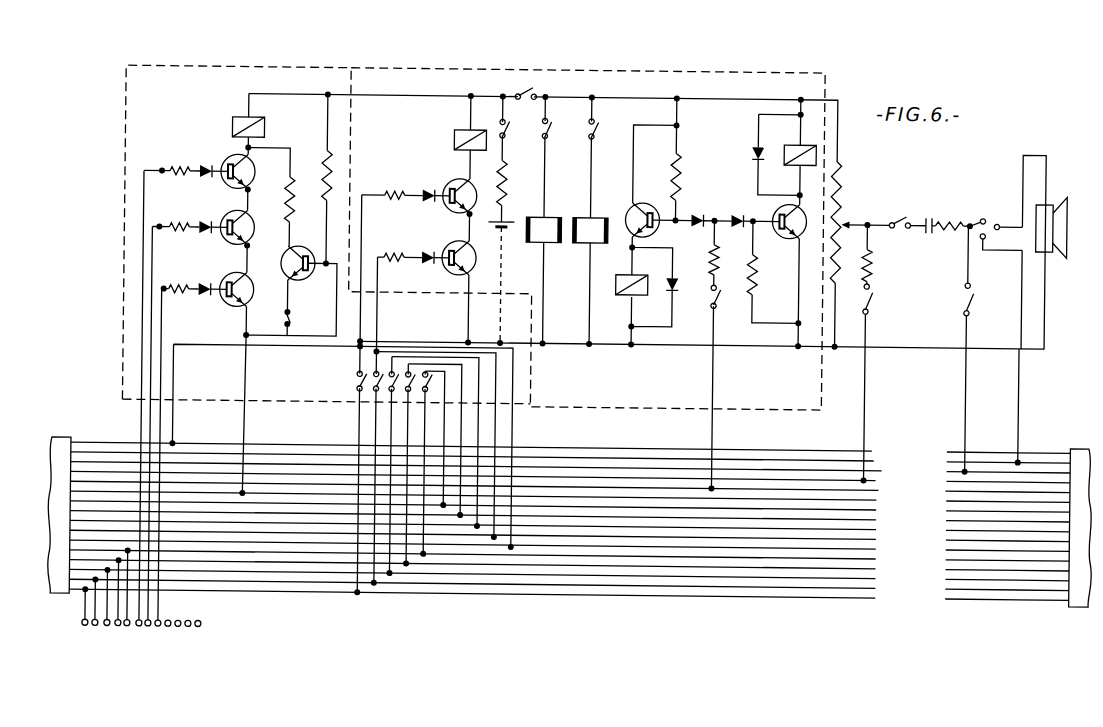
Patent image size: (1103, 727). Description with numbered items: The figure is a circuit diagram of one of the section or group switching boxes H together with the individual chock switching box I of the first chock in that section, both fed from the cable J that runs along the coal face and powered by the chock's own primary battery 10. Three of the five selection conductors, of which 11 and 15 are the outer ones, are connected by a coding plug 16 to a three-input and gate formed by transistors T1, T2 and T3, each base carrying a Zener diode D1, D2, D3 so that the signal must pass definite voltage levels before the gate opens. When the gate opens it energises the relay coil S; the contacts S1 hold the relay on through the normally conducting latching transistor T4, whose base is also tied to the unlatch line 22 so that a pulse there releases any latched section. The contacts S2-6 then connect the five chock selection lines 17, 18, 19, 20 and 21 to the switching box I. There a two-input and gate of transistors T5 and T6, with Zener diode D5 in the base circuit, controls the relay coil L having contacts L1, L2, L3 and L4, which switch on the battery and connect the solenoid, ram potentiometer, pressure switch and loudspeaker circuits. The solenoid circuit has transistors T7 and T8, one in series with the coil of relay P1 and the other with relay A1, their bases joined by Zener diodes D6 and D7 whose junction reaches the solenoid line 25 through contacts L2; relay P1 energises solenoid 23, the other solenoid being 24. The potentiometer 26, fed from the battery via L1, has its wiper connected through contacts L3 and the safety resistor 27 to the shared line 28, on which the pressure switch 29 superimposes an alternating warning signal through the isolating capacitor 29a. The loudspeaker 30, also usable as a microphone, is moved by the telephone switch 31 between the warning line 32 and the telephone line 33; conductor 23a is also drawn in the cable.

The primary battery 10 is at (504, 233).
The conductor 11 is at (880, 574).
The conductor 15 is at (880, 554).
The coding plug 16 is at (78, 635).
The chock selection line 17 is at (880, 506).
The chock selection line 18 is at (569, 516).
The chock selection line 19 is at (569, 525).
The chock selection line 20 is at (569, 535).
The chock selection line 21 is at (569, 545).
The unlatch line 22 is at (876, 448).
The solenoid 23 is at (598, 217).
The conductor 23a is at (948, 496).
The solenoid 24 is at (551, 217).
The solenoid line 25 is at (880, 487).
The potentiometer 26 is at (848, 212).
The safety resistor 27 is at (870, 267).
The ram potentiometer/pressure switch line 28 is at (878, 477).
The hydraulic pressure sensitive switch 29 is at (896, 228).
The isolating capacitor 29a is at (928, 214).
The loudspeaker 30 is at (1068, 202).
The telephone switch 31 is at (965, 232).
The warning line 32 is at (883, 467).
The telephone line 33 is at (878, 457).
The section switching box H is at (224, 70).
The individual switching box I is at (786, 70).
The cable J is at (72, 442).
The relay coil S is at (237, 115).
The relay contacts S1 is at (297, 323).
The relay contacts S2-6 is at (403, 395).
The relay coil L is at (451, 141).
The relay contacts L1 is at (514, 86).
The relay contacts L2 is at (723, 356).
The relay contacts L3 is at (878, 384).
The relay contacts L4 is at (977, 350).
The relay A1 is at (661, 278).
The relay P1 is at (605, 157).
The transistor T1 is at (249, 171).
The transistor T2 is at (247, 231).
The transistor T3 is at (246, 294).
The latching transistor T4 is at (306, 273).
The transistor T5 is at (447, 182).
The transistor T6 is at (447, 240).
The PNP transistor T7 is at (770, 243).
The transistor T8 is at (656, 201).
The Zener diode D1 is at (186, 162).
The Zener diode D2 is at (189, 239).
The Zener diode D3 is at (193, 300).
The Zener diode D5 is at (413, 270).
The Zener diode D6 is at (406, 195).
The Zener diode D7 is at (698, 213).